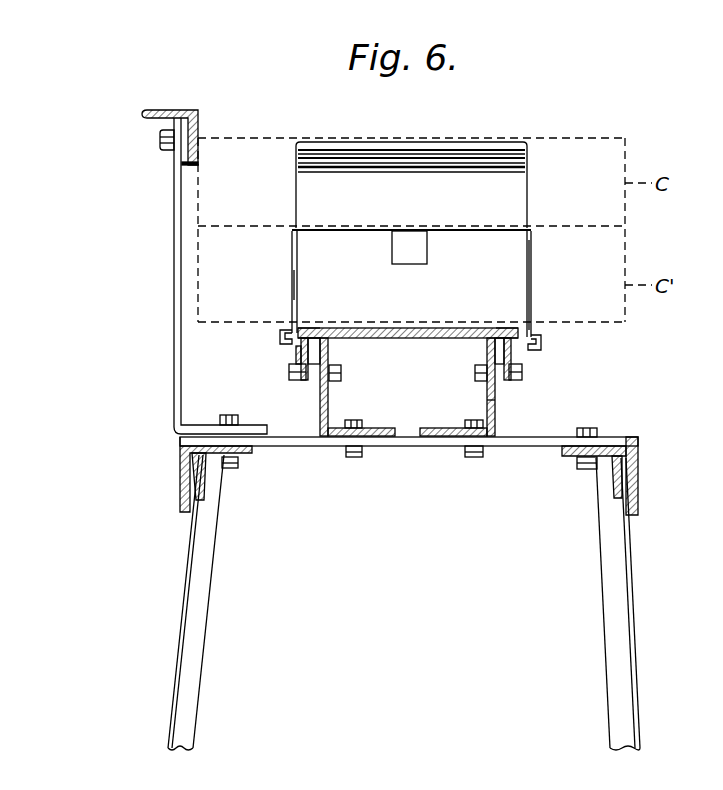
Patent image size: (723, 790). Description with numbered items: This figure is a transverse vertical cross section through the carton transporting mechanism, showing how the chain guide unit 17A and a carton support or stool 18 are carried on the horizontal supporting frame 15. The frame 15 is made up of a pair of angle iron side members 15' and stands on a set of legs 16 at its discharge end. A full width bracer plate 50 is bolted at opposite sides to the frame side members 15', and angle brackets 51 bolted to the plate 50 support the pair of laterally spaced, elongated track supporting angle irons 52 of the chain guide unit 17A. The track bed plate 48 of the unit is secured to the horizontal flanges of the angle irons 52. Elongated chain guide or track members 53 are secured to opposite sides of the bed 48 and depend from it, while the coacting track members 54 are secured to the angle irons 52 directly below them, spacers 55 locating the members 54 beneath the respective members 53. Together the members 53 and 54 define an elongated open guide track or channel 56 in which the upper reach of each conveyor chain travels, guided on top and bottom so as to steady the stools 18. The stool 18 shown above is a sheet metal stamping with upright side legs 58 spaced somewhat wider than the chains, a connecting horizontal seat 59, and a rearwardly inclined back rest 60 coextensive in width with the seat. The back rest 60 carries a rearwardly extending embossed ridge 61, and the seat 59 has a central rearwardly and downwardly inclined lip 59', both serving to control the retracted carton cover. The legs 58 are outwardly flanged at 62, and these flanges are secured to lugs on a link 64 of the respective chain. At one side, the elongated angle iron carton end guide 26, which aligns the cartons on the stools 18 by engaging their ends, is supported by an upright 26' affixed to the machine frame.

The horizontal supporting frame 15 is at (665, 476).
The angle iron side members 15' is at (380, 477).
The legs 16 is at (195, 676).
The chain guide unit 17A is at (466, 388).
The carton supports or stools 18 is at (533, 263).
The carton end guide 26 is at (180, 120).
The upright 26' is at (192, 276).
The track bed plate 48 is at (417, 338).
The bracer plates 50 is at (520, 447).
The angle brackets 51 is at (490, 412).
The track supporting angle irons 52 is at (326, 352).
The chain guide or track members 53 is at (308, 327).
The track or chain guide members 54 is at (301, 375).
The spacers 55 is at (312, 374).
The guide track or channel 56 is at (297, 372).
The upright side legs 58 is at (298, 282).
The horizontal seat 59 is at (411, 228).
The lip 59' is at (411, 284).
The back rest 60 is at (521, 200).
The ridge 61 is at (387, 162).
The flanges 62 is at (280, 332).
The chain link 64 is at (297, 352).